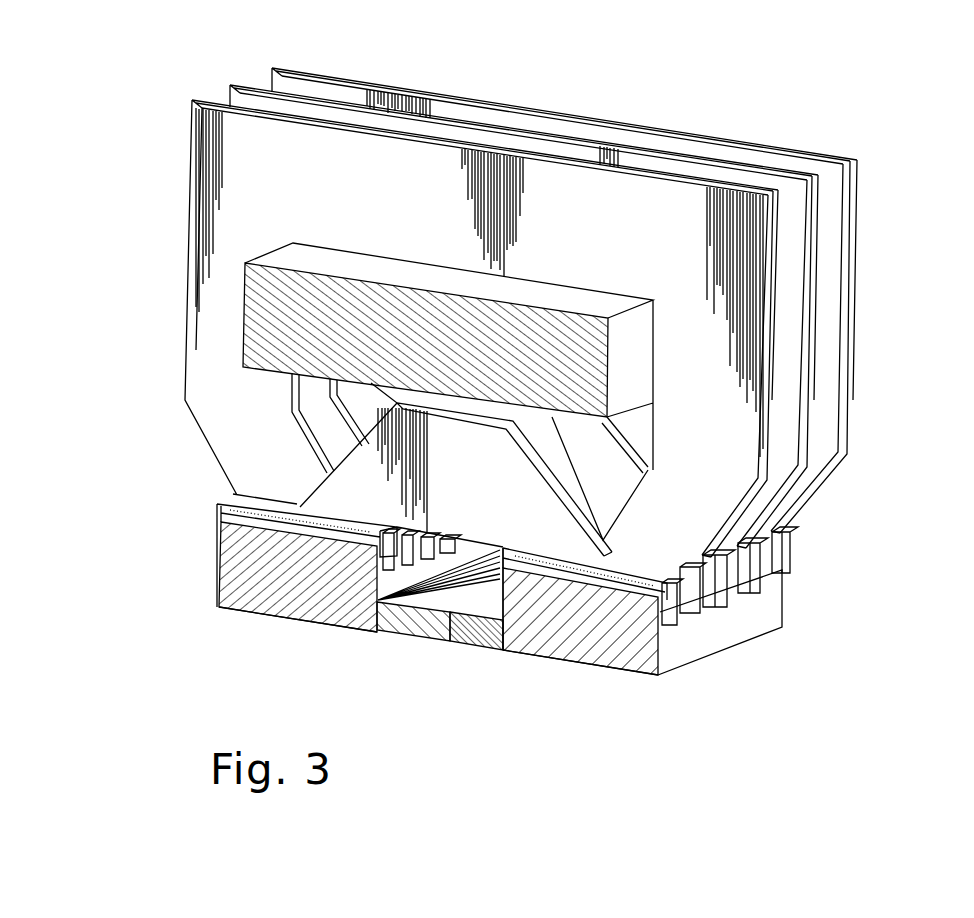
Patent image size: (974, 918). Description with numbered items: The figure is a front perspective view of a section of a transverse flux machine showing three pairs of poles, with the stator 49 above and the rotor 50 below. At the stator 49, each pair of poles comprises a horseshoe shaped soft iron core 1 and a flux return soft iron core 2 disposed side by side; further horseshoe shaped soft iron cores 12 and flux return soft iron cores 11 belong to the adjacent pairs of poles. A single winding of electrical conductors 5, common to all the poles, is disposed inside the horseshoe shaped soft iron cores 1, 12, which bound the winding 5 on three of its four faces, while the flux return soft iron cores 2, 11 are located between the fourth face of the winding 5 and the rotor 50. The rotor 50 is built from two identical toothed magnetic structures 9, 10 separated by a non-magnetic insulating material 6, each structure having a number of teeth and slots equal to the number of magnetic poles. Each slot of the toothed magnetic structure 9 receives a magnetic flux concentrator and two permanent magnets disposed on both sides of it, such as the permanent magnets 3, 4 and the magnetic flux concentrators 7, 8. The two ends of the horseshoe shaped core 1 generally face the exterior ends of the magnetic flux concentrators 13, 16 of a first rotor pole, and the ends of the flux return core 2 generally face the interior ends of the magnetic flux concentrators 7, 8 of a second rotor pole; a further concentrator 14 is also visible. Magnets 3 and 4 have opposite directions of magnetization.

The stator 49 is at (564, 302).
The horseshoe shaped soft iron core 1 is at (748, 400).
The horseshoe shaped soft iron core 12 is at (790, 350).
The flux return soft iron core 11 is at (568, 460).
The winding of electrical conductors 5 is at (305, 318).
The toothed magnetic structure 10 is at (247, 567).
The magnetic flux concentrator 8 is at (217, 513).
The non-magnetic insulating material 6 is at (452, 595).
The flux return soft iron core 2 is at (478, 522).
The permanent magnet 4 is at (398, 568).
The magnetic flux concentrator 16 is at (428, 556).
The toothed magnetic structure 9 is at (722, 613).
The permanent magnet 3 is at (668, 612).
The magnetic flux concentrator 7 is at (707, 610).
The magnetic flux concentrator 14 is at (763, 560).
The magnetic flux concentrator 13 is at (740, 587).
The rotor 50 is at (595, 670).